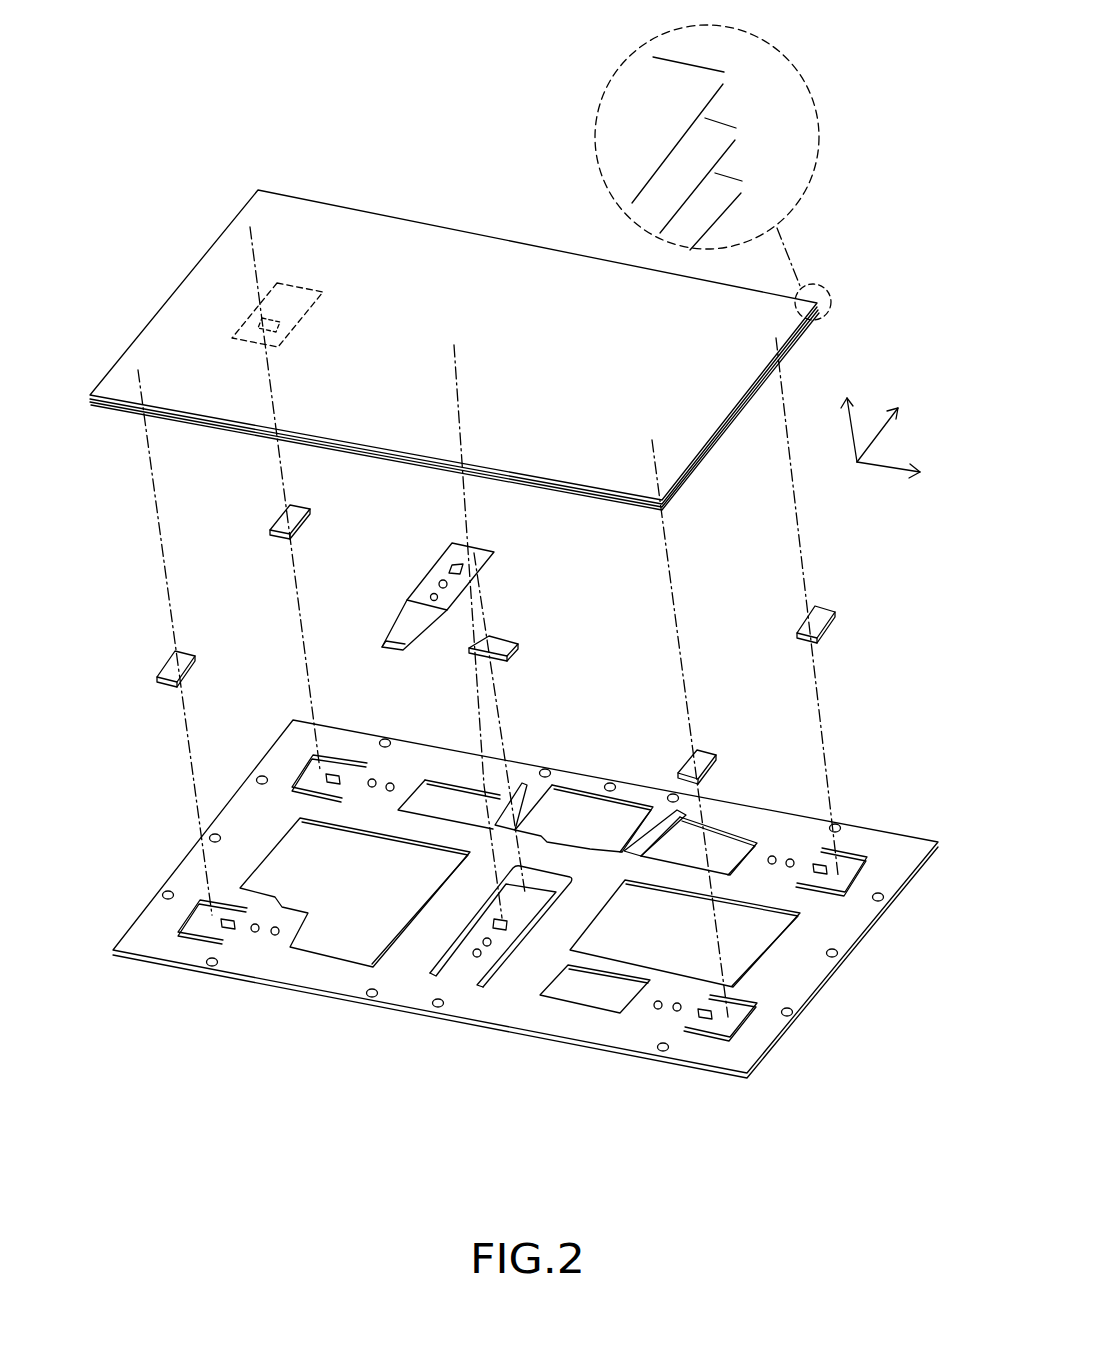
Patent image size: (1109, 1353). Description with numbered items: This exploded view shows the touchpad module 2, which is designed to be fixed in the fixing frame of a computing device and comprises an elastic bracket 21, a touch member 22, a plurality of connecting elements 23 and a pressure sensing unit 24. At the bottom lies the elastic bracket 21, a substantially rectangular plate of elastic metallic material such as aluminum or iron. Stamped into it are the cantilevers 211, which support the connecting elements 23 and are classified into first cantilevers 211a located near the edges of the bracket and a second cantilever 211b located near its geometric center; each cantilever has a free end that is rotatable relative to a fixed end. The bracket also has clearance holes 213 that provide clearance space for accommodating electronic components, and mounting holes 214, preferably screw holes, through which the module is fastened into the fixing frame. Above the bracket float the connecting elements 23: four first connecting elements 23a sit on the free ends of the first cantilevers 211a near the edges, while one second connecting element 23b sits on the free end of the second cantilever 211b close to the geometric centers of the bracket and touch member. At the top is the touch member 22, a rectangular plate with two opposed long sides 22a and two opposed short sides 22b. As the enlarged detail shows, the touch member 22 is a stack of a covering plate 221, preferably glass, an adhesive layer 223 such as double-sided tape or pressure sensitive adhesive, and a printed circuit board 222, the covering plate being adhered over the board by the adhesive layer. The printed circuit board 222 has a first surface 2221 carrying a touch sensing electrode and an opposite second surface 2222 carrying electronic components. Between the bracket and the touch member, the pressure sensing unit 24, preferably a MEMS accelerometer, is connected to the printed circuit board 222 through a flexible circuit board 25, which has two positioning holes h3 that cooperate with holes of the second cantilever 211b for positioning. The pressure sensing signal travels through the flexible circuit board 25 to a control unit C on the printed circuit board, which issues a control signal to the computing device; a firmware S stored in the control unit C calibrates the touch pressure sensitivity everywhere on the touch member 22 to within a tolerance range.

The touchpad module 2 is at (213, 108).
The elastic bracket 21 is at (172, 844).
The cantilevers 211 is at (290, 1105).
The first cantilevers 211a is at (312, 775).
The second cantilever 211b is at (460, 946).
The clearance hole 213 is at (345, 943).
The mounting holes 214 is at (795, 1012).
The touch member 22 is at (205, 231).
The long sides 22a is at (485, 227).
The short sides 22b is at (172, 285).
The covering plate 221 is at (606, 103).
The printed circuit board 222 is at (438, 1105).
The first surface 2221 is at (700, 187).
The second surface 2222 is at (712, 198).
The adhesive layer 223 is at (690, 133).
The connecting elements 23 is at (155, 1105).
The first connecting elements 23a is at (285, 518).
The second connecting element 23b is at (505, 645).
The pressure sensing unit 24 is at (452, 566).
The flexible circuit board 25 is at (453, 567).
The positioning holes h3 is at (443, 583).
The control unit C is at (296, 283).
The firmware S is at (283, 326).